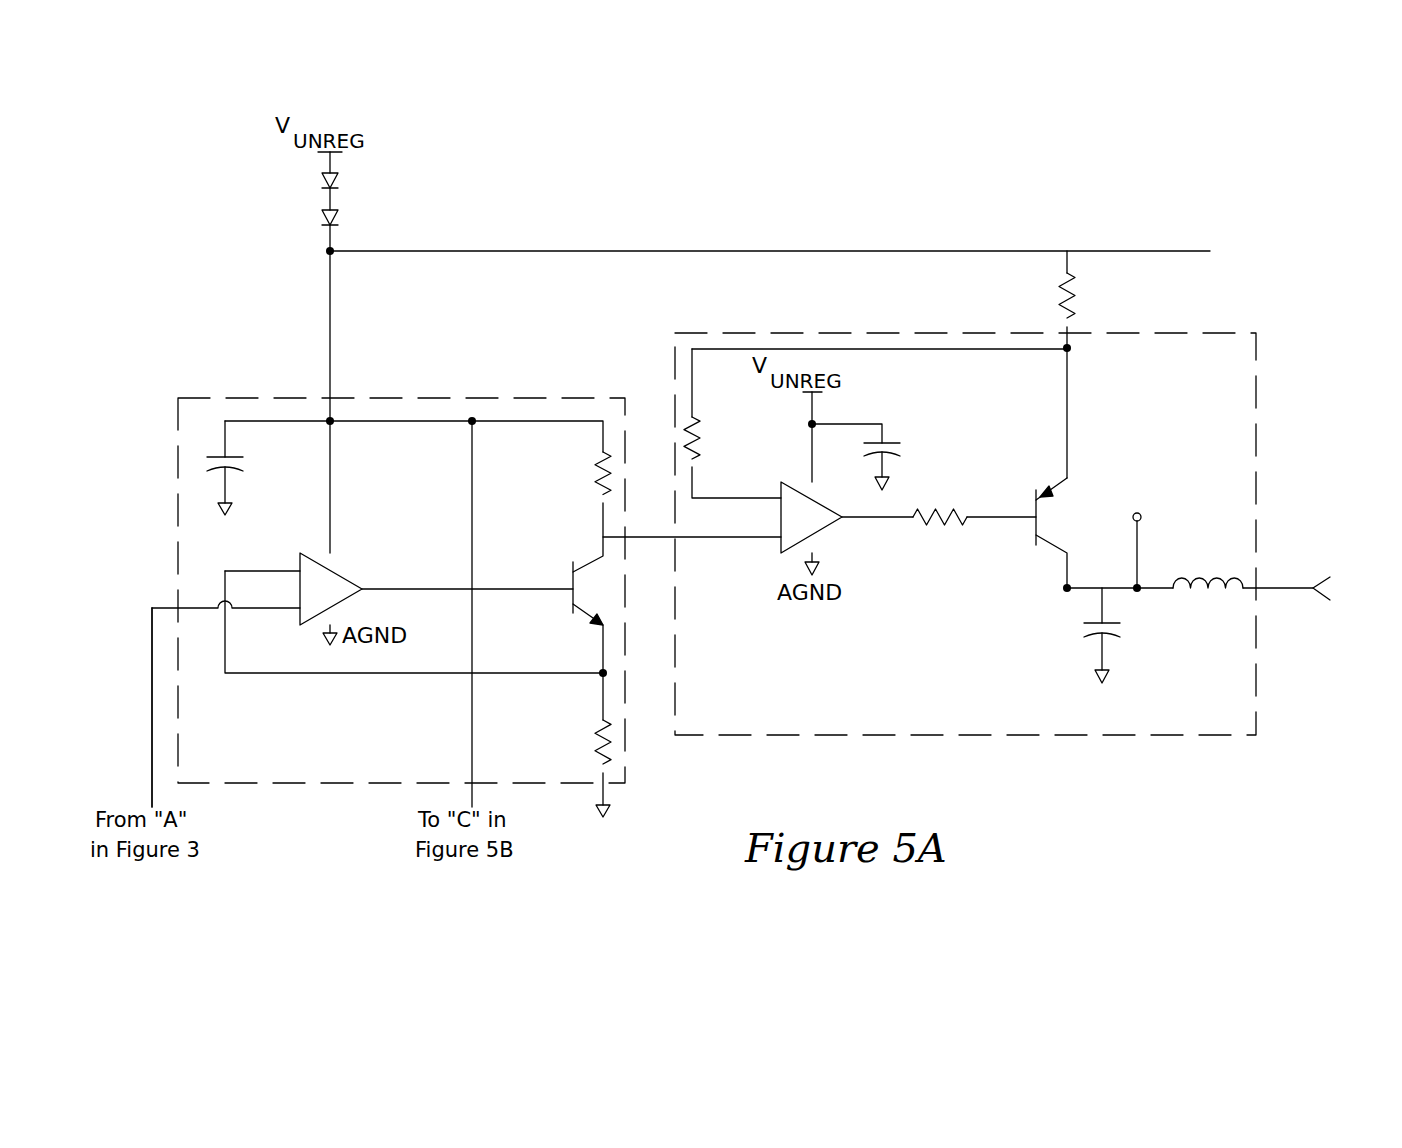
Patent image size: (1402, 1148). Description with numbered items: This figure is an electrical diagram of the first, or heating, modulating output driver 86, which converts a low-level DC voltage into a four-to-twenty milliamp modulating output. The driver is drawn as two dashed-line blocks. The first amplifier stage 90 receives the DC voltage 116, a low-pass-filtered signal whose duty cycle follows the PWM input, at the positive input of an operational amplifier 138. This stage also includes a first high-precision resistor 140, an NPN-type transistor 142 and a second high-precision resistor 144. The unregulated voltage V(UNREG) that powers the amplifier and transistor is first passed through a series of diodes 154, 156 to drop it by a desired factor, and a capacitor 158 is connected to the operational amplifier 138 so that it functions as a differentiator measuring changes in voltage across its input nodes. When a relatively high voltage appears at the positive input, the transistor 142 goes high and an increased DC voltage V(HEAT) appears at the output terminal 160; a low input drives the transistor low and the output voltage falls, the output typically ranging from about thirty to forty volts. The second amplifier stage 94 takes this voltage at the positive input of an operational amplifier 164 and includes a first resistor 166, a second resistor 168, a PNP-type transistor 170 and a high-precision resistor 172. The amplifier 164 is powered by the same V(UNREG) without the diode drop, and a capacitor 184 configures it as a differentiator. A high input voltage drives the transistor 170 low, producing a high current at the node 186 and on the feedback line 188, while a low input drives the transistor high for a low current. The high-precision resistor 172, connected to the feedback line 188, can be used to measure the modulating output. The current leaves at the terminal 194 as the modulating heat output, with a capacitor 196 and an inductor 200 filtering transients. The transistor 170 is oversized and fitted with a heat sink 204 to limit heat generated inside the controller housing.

The first modulating output driver 86 is at (727, 237).
The first amplifier stage 90 is at (455, 398).
The second amplifier stage 94 is at (805, 333).
The DC voltage 116 is at (152, 705).
The operational amplifier 138 is at (342, 568).
The first high-precision resistor 140 is at (600, 462).
The NPN-type transistor 142 is at (570, 578).
The second high-precision resistor 144 is at (600, 735).
The diode 154 is at (322, 176).
The diode 156 is at (322, 213).
The capacitor 158 is at (215, 456).
The output terminal 160 is at (352, 596).
The operational amplifier 164 is at (826, 527).
The first resistor 166 is at (700, 455).
The second resistor 168 is at (960, 512).
The PNP-type transistor 170 is at (1044, 520).
The high-precision resistor 172 is at (1062, 284).
The capacitor 184 is at (886, 442).
The node 186 is at (1063, 596).
The feedback line 188 is at (935, 349).
The terminal 194 is at (1316, 582).
The capacitor 196 is at (1095, 636).
The inductor 200 is at (1185, 580).
The heat sink 204 is at (1141, 540).